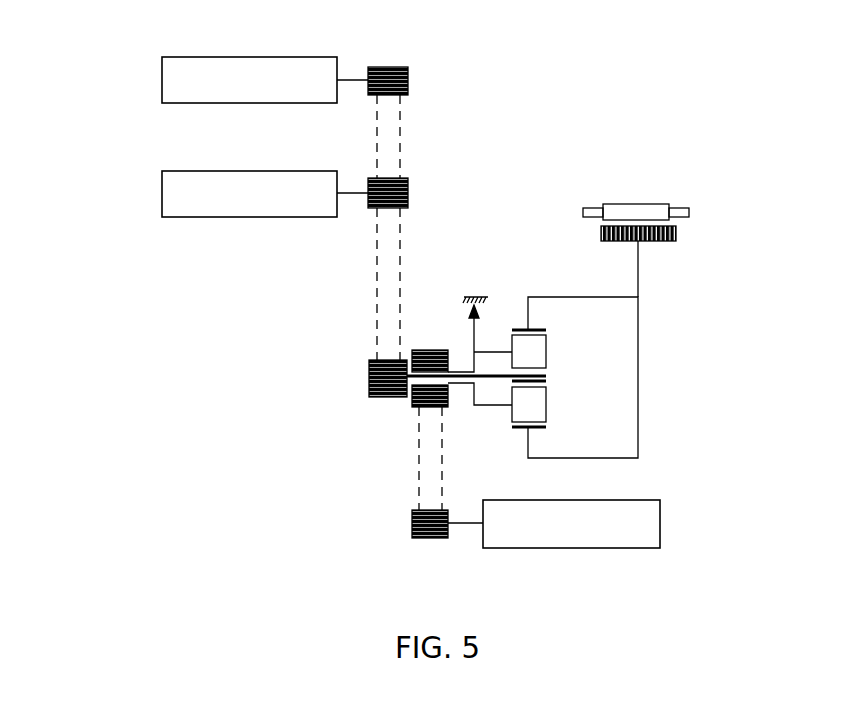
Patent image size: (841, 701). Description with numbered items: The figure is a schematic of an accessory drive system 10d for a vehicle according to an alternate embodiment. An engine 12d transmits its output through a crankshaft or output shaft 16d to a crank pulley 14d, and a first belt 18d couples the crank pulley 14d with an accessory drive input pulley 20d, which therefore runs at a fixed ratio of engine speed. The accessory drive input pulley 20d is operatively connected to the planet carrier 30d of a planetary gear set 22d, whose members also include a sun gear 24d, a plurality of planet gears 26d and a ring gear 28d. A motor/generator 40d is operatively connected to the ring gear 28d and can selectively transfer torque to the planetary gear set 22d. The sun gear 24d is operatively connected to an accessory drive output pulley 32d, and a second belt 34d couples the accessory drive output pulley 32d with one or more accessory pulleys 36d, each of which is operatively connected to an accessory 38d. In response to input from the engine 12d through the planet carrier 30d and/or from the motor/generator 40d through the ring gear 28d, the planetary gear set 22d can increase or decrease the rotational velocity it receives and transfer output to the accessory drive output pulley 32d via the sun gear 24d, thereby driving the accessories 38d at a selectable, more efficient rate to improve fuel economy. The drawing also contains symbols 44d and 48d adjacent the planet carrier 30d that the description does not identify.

The accessory drive system 10d is at (658, 80).
The engine 12d is at (625, 548).
The crank pulley 14d is at (423, 540).
The output shaft 16d is at (465, 524).
The first belt 18d is at (419, 478).
The accessory drive input pulley 20d is at (429, 350).
The planetary gear set 22d is at (655, 424).
The sun gear 24d is at (550, 372).
The planet gears 26d is at (533, 351).
The ring gear 28d is at (537, 329).
The planet carrier 30d is at (497, 405).
The accessory drive output pulley 32d is at (369, 367).
The second belt 34d is at (402, 278).
The accessory pulleys 36d is at (393, 67).
The accessories 38d is at (170, 57).
The motor/generator 40d is at (663, 201).
The anchor arrow 44d is at (479, 311).
The ground 48d is at (483, 291).